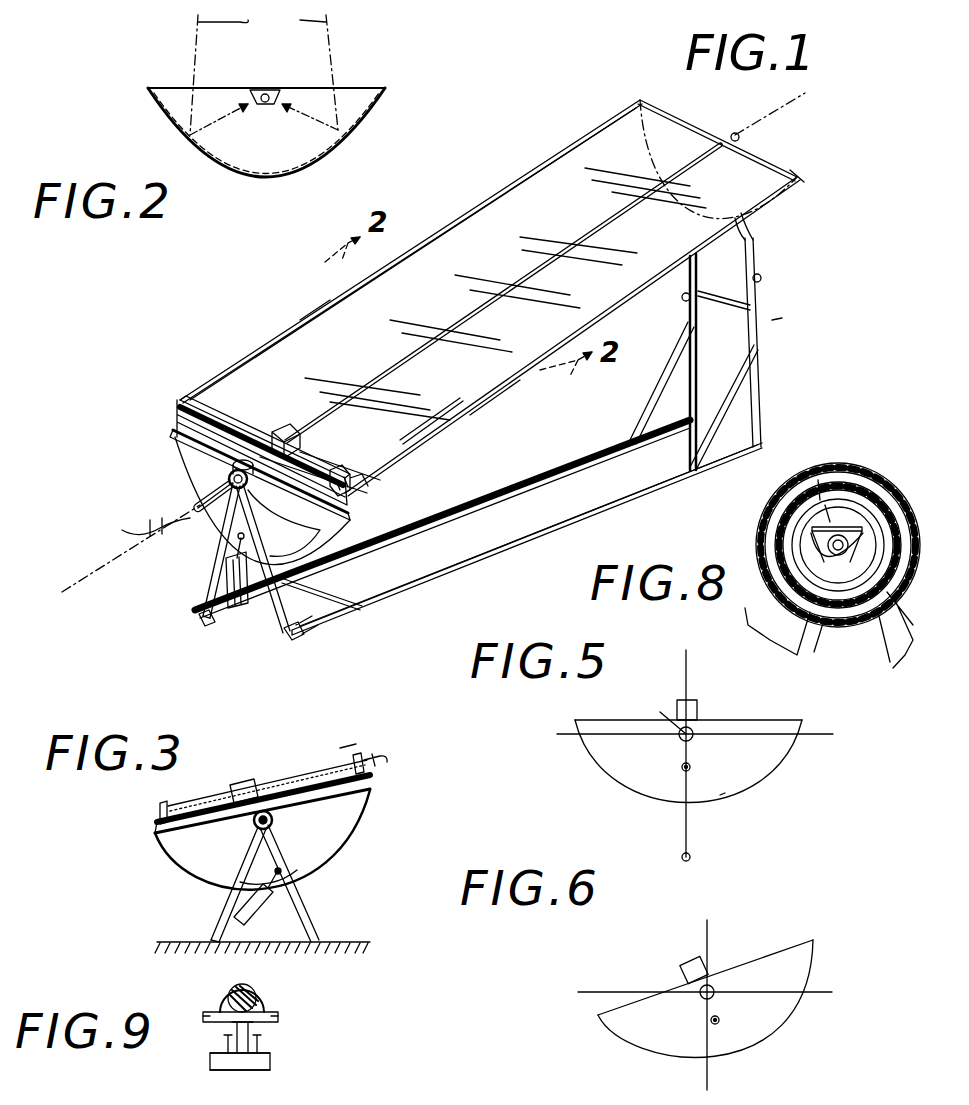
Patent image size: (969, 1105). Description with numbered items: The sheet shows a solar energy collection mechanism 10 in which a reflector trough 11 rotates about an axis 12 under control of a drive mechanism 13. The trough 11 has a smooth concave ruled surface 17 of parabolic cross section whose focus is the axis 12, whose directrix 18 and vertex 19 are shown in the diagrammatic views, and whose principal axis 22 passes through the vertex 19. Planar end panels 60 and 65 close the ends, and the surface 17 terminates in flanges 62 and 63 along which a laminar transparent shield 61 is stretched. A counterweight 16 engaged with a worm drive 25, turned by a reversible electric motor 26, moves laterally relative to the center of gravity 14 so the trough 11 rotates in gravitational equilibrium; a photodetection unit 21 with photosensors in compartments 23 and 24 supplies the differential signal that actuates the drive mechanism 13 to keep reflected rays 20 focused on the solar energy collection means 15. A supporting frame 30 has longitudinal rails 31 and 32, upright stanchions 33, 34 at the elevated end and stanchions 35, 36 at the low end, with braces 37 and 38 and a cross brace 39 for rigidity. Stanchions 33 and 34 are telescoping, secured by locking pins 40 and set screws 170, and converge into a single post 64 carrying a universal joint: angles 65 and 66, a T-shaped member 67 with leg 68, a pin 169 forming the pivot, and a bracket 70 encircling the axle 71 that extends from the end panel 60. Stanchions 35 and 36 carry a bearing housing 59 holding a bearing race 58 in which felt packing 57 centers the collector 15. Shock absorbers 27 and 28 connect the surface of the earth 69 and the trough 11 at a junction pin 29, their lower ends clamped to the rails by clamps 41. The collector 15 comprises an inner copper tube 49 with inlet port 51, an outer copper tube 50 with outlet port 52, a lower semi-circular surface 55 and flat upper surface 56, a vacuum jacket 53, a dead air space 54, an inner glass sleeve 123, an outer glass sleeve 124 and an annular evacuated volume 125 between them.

In FIG. 1, the solar energy collection mechanism 10 is at (778, 322).
In FIG. 1, the reflector trough 11 is at (518, 380).
In FIG. 2, the reflector trough 11 is at (158, 116).
In FIG. 3, the reflector trough 11 is at (352, 826).
In FIG. 5, the reflector trough 11 is at (600, 764).
In FIG. 6, the reflector trough 11 is at (645, 1052).
In FIG. 1, the axis 12 is at (803, 92).
In FIG. 5, the axis 12 is at (657, 712).
In FIG. 1, the drive mechanism 13 is at (420, 440).
In FIG. 3, the drive mechanism 13 is at (348, 742).
In FIG. 5, the center of gravity 14 is at (692, 768).
In FIG. 6, the center of gravity 14 is at (720, 1020).
In FIG. 1, the solar energy collection means 15 is at (428, 345).
In FIG. 2, the solar energy collection means 15 is at (283, 90).
In FIG. 8, the solar energy collection means 15 is at (882, 482).
In FIG. 3, the solar energy collection means 15 is at (276, 821).
In FIG. 5, the solar energy collection means 15 is at (678, 740).
In FIG. 6, the solar energy collection means 15 is at (716, 990).
In FIG. 1, the counterweight 16 is at (280, 428).
In FIG. 3, the counterweight 16 is at (241, 783).
In FIG. 5, the counterweight 16 is at (700, 710).
In FIG. 6, the counterweight 16 is at (682, 968).
In FIG. 2, the concave ruled surface 17 is at (230, 155).
In FIG. 5, the concave ruled surface 17 is at (765, 752).
In FIG. 5, the directrix 18 is at (692, 858).
In FIG. 5, the vertex 19 is at (720, 796).
In FIG. 2, the rays 20 is at (264, 72).
In FIG. 1, the photodetection unit 21 is at (292, 464).
In FIG. 5, the principal axis 22 is at (684, 816).
In FIG. 6, the principal axis 22 is at (710, 926).
In FIG. 1, the compartment 23 is at (240, 455).
In FIG. 1, the compartment 24 is at (255, 485).
In FIG. 1, the worm drive 25 is at (208, 390).
In FIG. 3, the worm drive 25 is at (296, 776).
In FIG. 1, the reversible electric motor 26 is at (360, 470).
In FIG. 3, the reversible electric motor 26 is at (366, 753).
In FIG. 1, the shock absorber 27 is at (292, 634).
In FIG. 3, the shock absorber 27 is at (312, 924).
In FIG. 1, the shock absorber 28 is at (242, 606).
In FIG. 3, the shock absorber 28 is at (240, 920).
In FIG. 1, the junction pin 29 is at (212, 560).
In FIG. 3, the junction pin 29 is at (272, 870).
In FIG. 1, the supporting frame 30 is at (478, 560).
In FIG. 1, the longitudinal rail 31 is at (532, 530).
In FIG. 1, the longitudinal rail 32 is at (500, 492).
In FIG. 1, the upright stanchion 33 is at (762, 370).
In FIG. 1, the upright stanchion 34 is at (684, 312).
In FIG. 1, the upright stanchion 35 is at (282, 552).
In FIG. 8, the upright stanchion 35 is at (890, 662).
In FIG. 3, the upright stanchion 35 is at (298, 878).
In FIG. 1, the upright stanchion 36 is at (204, 606).
In FIG. 8, the upright stanchion 36 is at (776, 648).
In FIG. 3, the upright stanchion 36 is at (228, 889).
In FIG. 1, the brace 37 is at (335, 598).
In FIG. 1, the brace 38 is at (650, 404).
In FIG. 1, the cross brace 39 is at (724, 298).
In FIG. 1, the locking pin 40 is at (764, 240).
In FIG. 1, the clamp 41 is at (224, 628).
In FIG. 8, the inner copper tube 49 is at (863, 520).
In FIG. 8, the outer copper tube 50 is at (798, 530).
In FIG. 1, the inlet port 51 is at (200, 528).
In FIG. 1, the outlet port 52 is at (176, 518).
In FIG. 8, the vacuum jacket 53 is at (895, 620).
In FIG. 8, the dead air space 54 is at (828, 500).
In FIG. 2, the lower semi-circular surface 55 is at (265, 108).
In FIG. 8, the lower semi-circular surface 55 is at (792, 596).
In FIG. 8, the flat upper surface 56 is at (848, 520).
In FIG. 8, the felt packing 57 is at (822, 630).
In FIG. 8, the bearing race 58 is at (790, 572).
In FIG. 8, the bearing housing 59 is at (806, 555).
In FIG. 1, the end panel 60 is at (800, 174).
In FIG. 1, the transparent shield 61 is at (582, 165).
In FIG. 1, the flange 62 is at (482, 405).
In FIG. 1, the flange 63 is at (322, 312).
In FIG. 9, the post 64 is at (262, 1070).
In FIG. 1, the angle 65 is at (186, 464).
In FIG. 9, the angle 65 is at (270, 1052).
In FIG. 9, the angle 66 is at (210, 1062).
In FIG. 9, the T-shaped member 67 is at (262, 1028).
In FIG. 9, the leg 68 is at (225, 1028).
In FIG. 3, the surface of the earth 69 is at (358, 940).
In FIG. 9, the bracket 70 is at (228, 992).
In FIG. 9, the axle 71 is at (258, 988).
In FIG. 8, the inner glass sleeve 123 is at (808, 560).
In FIG. 8, the outer glass sleeve 124 is at (816, 470).
In FIG. 8, the annular evacuated volume 125 is at (802, 545).
In FIG. 9, the pin 169 is at (212, 1050).
In FIG. 1, the set screw 170 is at (761, 280).